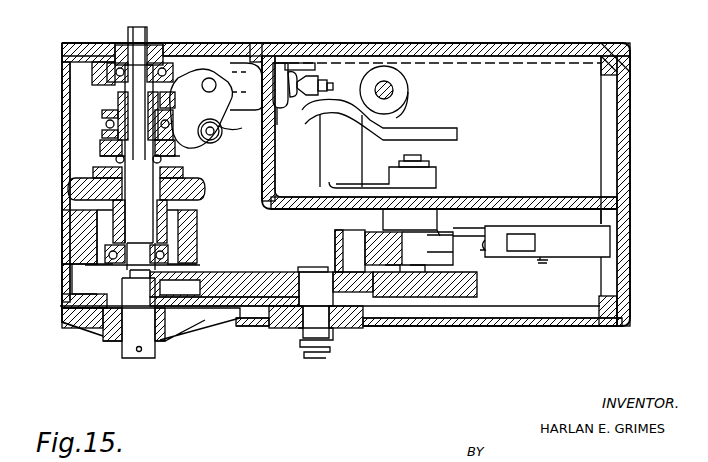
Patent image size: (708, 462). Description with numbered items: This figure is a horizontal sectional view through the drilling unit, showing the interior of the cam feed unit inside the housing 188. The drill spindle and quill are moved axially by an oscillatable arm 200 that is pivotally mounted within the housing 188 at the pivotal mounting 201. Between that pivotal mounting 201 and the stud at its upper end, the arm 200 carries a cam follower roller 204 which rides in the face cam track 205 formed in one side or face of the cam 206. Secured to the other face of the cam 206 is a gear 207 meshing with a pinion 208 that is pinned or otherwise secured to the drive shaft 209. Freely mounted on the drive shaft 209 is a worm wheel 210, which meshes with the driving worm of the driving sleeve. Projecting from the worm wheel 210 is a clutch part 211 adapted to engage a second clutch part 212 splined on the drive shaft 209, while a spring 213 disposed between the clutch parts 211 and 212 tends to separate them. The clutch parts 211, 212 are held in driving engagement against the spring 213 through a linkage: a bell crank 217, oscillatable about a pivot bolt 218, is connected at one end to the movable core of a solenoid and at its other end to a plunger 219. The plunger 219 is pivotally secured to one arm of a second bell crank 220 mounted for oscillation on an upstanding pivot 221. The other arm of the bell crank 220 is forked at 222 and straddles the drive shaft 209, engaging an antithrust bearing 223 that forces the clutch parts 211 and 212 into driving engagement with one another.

The housing 188 is at (627, 193).
The oscillatable arm 200 is at (374, 229).
The pivotal mounting 201 is at (416, 166).
The cam follower roller 204 is at (356, 262).
The face cam track 205 is at (187, 281).
The cam 206 is at (268, 272).
The gear 207 is at (205, 320).
The pinion 208 is at (103, 335).
The drive shaft 209 is at (139, 359).
The worm wheel 210 is at (185, 194).
The clutch part 211 is at (187, 169).
The clutch part 212 is at (97, 143).
The spring 213 is at (100, 158).
The bell crank 217 is at (441, 135).
The pivot bolt 218 is at (301, 63).
The plunger 219 is at (286, 84).
The bell crank 220 is at (222, 133).
The upstanding pivot 221 is at (220, 133).
The forked arm 222 is at (173, 97).
The antithrust bearing 223 is at (101, 112).